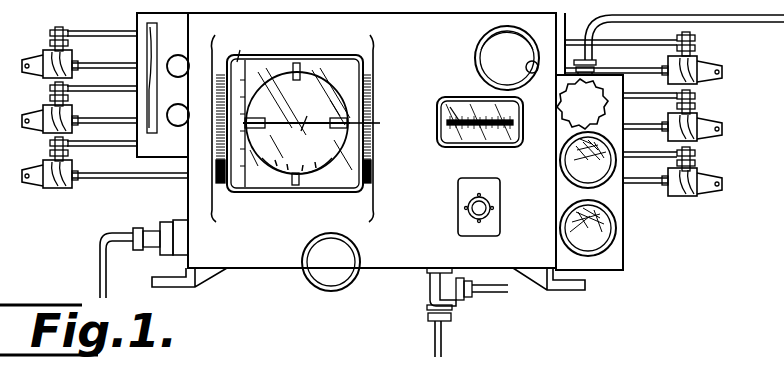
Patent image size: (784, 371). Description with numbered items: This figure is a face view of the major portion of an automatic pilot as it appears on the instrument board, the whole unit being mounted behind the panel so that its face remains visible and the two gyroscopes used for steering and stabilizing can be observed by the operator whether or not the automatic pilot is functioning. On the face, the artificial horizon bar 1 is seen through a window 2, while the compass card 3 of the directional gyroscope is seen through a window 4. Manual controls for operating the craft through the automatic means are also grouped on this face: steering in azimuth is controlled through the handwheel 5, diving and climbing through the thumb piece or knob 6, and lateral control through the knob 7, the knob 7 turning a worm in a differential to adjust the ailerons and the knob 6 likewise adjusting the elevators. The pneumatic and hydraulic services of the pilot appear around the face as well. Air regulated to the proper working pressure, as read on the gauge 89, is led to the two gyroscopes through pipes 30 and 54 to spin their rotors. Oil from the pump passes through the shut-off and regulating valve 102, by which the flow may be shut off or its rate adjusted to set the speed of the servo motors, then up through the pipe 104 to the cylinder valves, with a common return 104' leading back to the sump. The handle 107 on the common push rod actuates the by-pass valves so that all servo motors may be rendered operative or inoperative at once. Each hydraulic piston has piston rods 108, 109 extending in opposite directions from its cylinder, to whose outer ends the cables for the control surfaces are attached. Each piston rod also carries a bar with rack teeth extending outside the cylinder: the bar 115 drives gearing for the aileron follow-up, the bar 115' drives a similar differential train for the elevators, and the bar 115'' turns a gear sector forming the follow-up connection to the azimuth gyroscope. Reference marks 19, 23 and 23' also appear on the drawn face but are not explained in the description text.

The artificial horizon bar 1 is at (310, 115).
The window 2 is at (337, 182).
The compass card 3 is at (468, 135).
The window 4 is at (450, 107).
The handwheel 5 is at (507, 58).
The thumb piece or knob 6 is at (176, 120).
The knob 7 is at (174, 62).
The scale 19 is at (246, 44).
The pointer bar 23 is at (296, 76).
The pointer bar extension 23' is at (379, 121).
The pipe 30 is at (157, 230).
The pipe 54 is at (444, 336).
The gauge 89 is at (572, 167).
The shut-off and regulating valve 102 is at (603, 233).
The pipe 104 is at (679, 45).
The common return 104' is at (89, 265).
The handle 107 is at (331, 262).
The piston rod 108 is at (630, 68).
The piston rod 109 is at (79, 52).
The bar 115 is at (621, 36).
The bar 115' is at (79, 107).
The bar 115'' is at (672, 171).